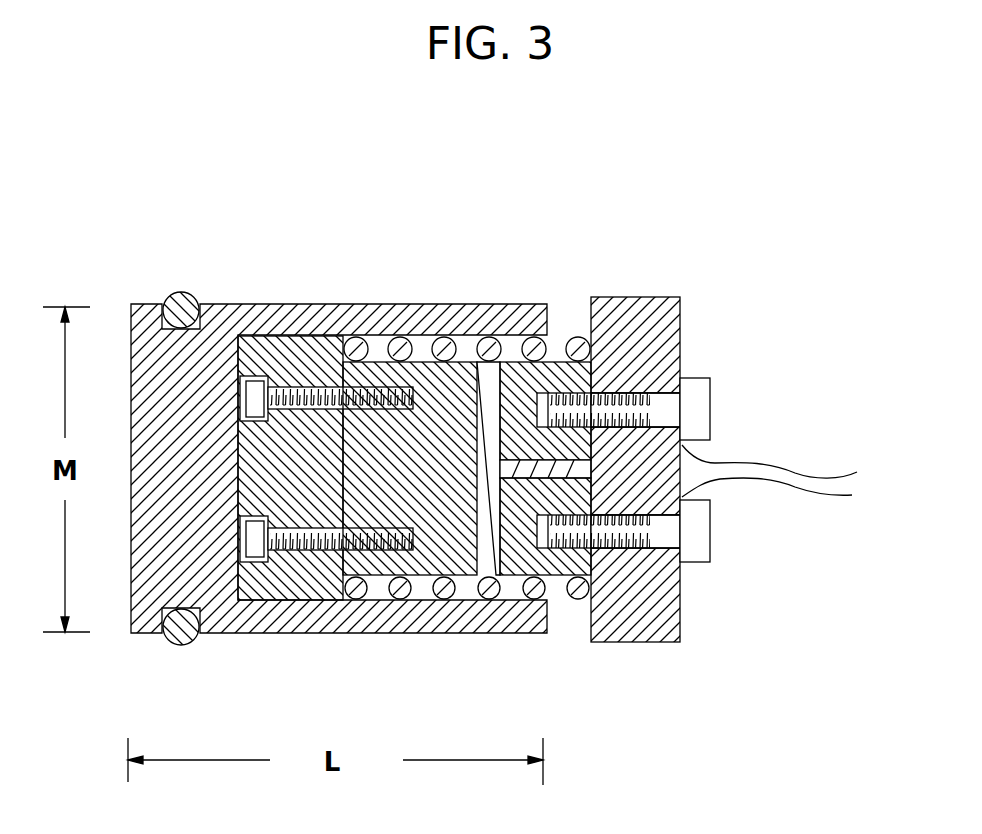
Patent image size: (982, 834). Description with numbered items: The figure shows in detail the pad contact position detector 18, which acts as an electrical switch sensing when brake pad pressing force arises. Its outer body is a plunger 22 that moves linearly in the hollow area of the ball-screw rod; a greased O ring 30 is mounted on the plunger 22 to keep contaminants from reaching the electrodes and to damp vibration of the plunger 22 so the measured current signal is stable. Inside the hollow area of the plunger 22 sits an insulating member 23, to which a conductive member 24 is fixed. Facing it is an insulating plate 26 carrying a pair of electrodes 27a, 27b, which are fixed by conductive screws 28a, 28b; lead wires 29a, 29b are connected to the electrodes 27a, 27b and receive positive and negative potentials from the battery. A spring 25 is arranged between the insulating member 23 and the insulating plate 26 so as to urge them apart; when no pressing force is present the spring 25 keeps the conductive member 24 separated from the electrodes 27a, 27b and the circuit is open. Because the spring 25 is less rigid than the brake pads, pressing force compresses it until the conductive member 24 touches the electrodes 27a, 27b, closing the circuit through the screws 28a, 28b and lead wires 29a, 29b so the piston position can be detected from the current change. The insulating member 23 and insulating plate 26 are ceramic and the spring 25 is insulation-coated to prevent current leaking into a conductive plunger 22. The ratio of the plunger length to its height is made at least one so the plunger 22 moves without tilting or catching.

The pad contact position detector 18 is at (402, 252).
The plunger 22 is at (275, 633).
The insulating member 23 is at (288, 345).
The conductive member 24 is at (418, 575).
The spring 25 is at (486, 577).
The insulating plate 26 is at (640, 297).
The electrode 27a is at (562, 372).
The electrode 27b is at (558, 575).
The conductive screw 28a is at (700, 378).
The conductive screw 28b is at (700, 562).
The lead wire 29a is at (812, 474).
The lead wire 29b is at (822, 497).
The O ring 30 is at (181, 292).